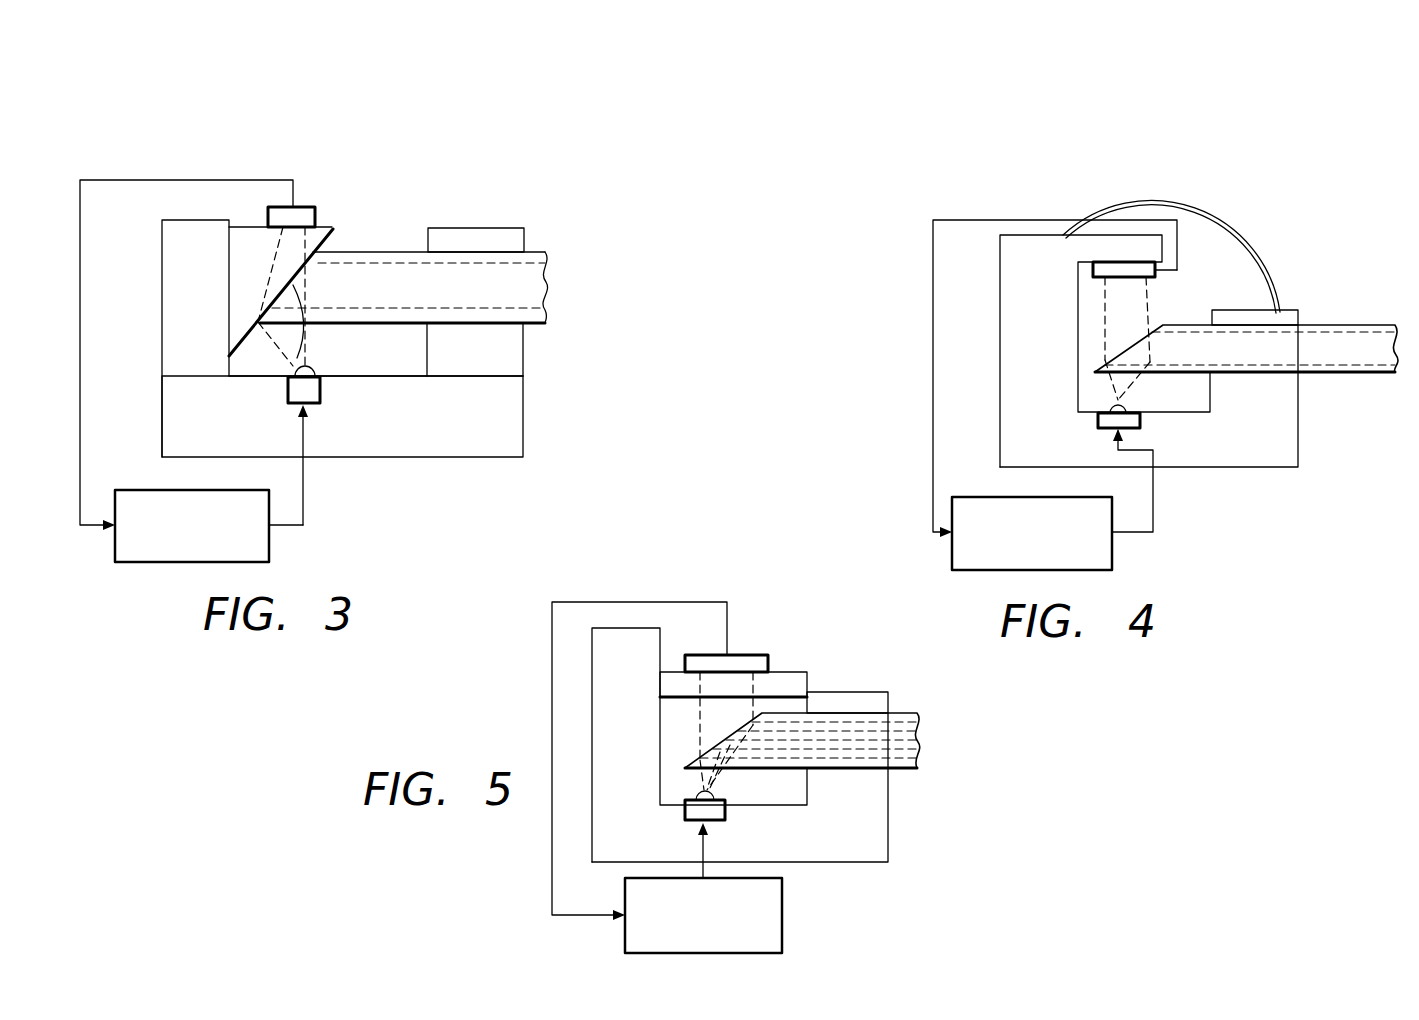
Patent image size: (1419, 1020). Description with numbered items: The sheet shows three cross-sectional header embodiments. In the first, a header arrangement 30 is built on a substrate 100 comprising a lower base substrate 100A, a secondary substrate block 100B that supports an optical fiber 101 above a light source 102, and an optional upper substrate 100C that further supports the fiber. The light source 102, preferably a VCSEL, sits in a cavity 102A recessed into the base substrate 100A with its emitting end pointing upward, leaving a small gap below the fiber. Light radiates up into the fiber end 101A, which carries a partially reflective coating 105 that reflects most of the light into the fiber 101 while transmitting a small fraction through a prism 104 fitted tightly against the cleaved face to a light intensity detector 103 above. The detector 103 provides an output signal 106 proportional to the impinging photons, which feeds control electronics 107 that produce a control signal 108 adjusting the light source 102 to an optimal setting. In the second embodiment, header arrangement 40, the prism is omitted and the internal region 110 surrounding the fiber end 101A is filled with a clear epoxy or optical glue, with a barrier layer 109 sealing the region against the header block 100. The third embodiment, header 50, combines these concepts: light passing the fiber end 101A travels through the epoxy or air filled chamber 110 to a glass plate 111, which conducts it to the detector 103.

In FIG. 3, the header arrangement 30 is at (390, 186).
In FIG. 4, the header arrangement 40 is at (1254, 204).
In FIG. 5, the header 50 is at (826, 582).
In FIG. 4, the substrate 100 is at (1276, 447).
In FIG. 5, the substrate 100 is at (872, 807).
In FIG. 3, the lower base substrate 100A is at (502, 438).
In FIG. 3, the secondary substrate block 100B is at (496, 358).
In FIG. 3, the upper substrate 100C is at (483, 236).
In FIG. 4, the upper substrate 100C is at (1272, 318).
In FIG. 5, the upper substrate 100C is at (858, 690).
In FIG. 3, the optical fiber 101 is at (530, 277).
In FIG. 4, the optical fiber 101 is at (1358, 358).
In FIG. 5, the optical fiber 101 is at (905, 718).
In FIG. 3, the fiber end 101A is at (300, 286).
In FIG. 4, the fiber end 101A is at (1128, 355).
In FIG. 5, the fiber end 101A is at (692, 767).
In FIG. 3, the light source 102 is at (316, 370).
In FIG. 4, the light source 102 is at (1110, 432).
In FIG. 5, the light source 102 is at (685, 815).
In FIG. 3, the cavity 102A is at (320, 392).
In FIG. 4, the cavity 102A is at (1097, 422).
In FIG. 5, the cavity 102A is at (725, 817).
In FIG. 3, the light intensity detector 103 is at (296, 204).
In FIG. 4, the light intensity detector 103 is at (1130, 268).
In FIG. 5, the light intensity detector 103 is at (752, 666).
In FIG. 3, the prism 104 is at (272, 256).
In FIG. 3, the partially reflective coating 105 is at (296, 350).
In FIG. 4, the partially reflective coating 105 is at (1126, 348).
In FIG. 5, the partially reflective coating 105 is at (700, 745).
In FIG. 3, the output signal 106 is at (160, 180).
In FIG. 4, the output signal 106 is at (988, 220).
In FIG. 5, the output signal 106 is at (637, 603).
In FIG. 3, the control electronics 107 is at (258, 556).
In FIG. 4, the control electronics 107 is at (1112, 560).
In FIG. 5, the control electronics 107 is at (772, 940).
In FIG. 3, the control signal 108 is at (303, 490).
In FIG. 4, the control signal 108 is at (1153, 497).
In FIG. 5, the control signal 108 is at (703, 865).
In FIG. 4, the barrier layer 109 is at (1262, 242).
In FIG. 4, the internal region 110 is at (1232, 279).
In FIG. 5, the internal region 110 is at (697, 729).
In FIG. 5, the glass plate 111 is at (798, 698).